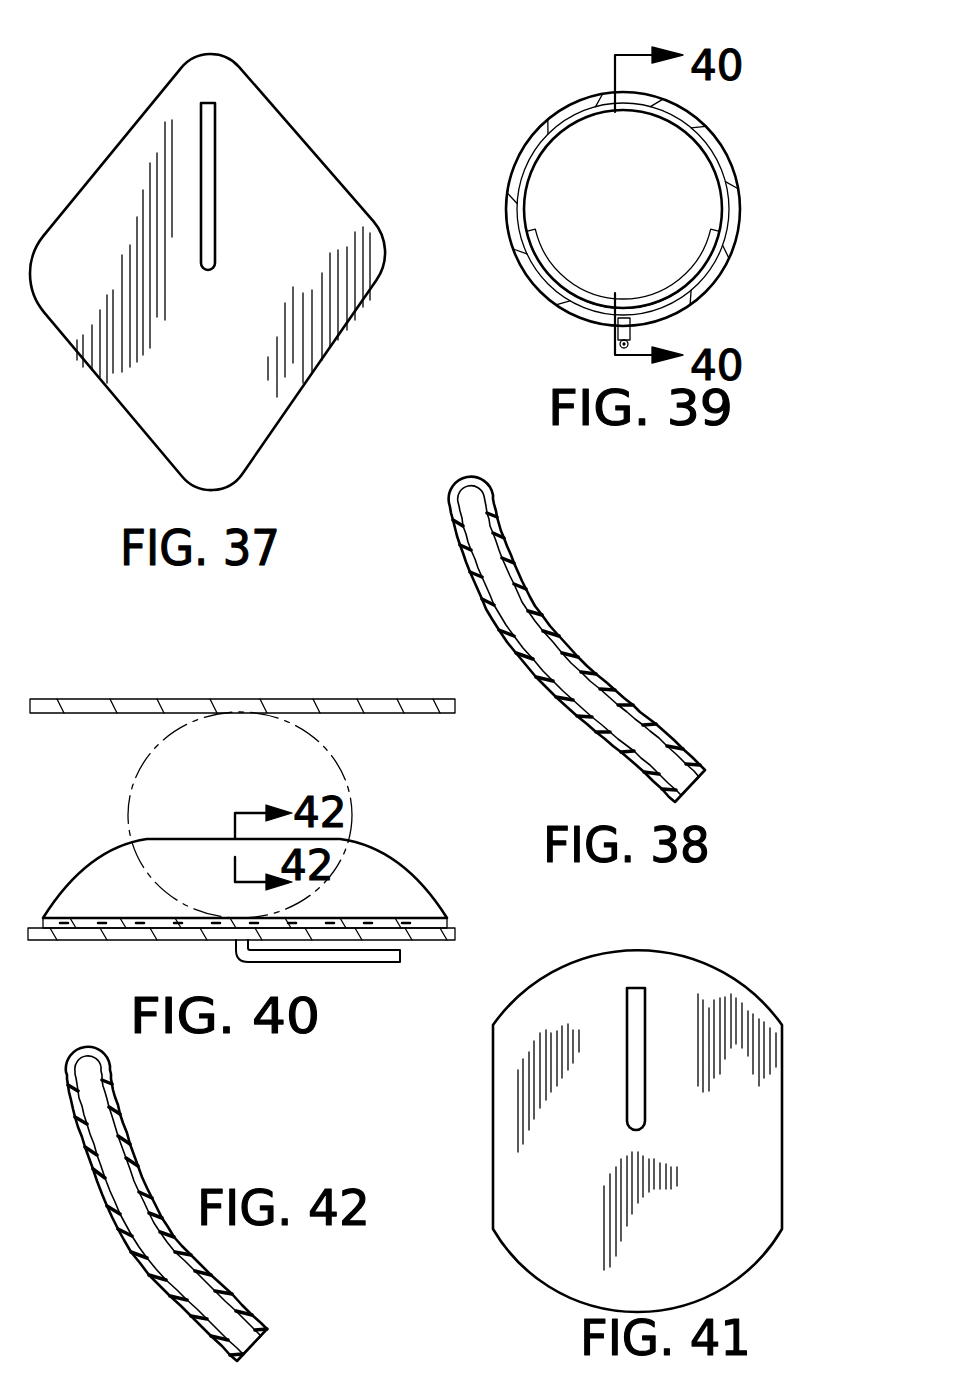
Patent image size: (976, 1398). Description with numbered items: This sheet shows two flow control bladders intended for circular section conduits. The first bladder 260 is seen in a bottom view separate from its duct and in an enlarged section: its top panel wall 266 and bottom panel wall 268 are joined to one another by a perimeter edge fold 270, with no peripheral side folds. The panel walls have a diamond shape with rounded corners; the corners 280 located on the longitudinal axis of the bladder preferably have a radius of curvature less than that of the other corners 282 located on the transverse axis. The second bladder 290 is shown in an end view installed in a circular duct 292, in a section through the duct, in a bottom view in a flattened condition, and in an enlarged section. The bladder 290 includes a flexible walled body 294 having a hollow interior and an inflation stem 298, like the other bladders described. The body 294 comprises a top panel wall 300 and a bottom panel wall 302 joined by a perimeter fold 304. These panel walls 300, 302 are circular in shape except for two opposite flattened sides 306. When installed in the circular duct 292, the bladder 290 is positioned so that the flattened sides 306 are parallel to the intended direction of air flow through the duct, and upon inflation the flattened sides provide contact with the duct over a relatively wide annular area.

In FIG. 37, the flow control bladder 260 is at (70, 374).
In FIG. 38, the top panel wall 266 is at (520, 582).
In FIG. 38, the bottom panel wall 268 is at (510, 642).
In FIG. 37, the perimeter edge fold 270 is at (103, 143).
In FIG. 38, the perimeter edge fold 270 is at (465, 478).
In FIG. 37, the corners 280 is at (206, 55).
In FIG. 37, the corners 282 is at (31, 272).
In FIG. 39, the flow control bladder 290 is at (562, 266).
In FIG. 40, the flow control bladder 290 is at (402, 854).
In FIG. 41, the flow control bladder 290 is at (678, 940).
In FIG. 39, the circular duct 292 is at (717, 130).
In FIG. 40, the circular duct 292 is at (356, 699).
In FIG. 39, the flexible walled body 294 is at (673, 288).
In FIG. 39, the inflation stem 298 is at (632, 336).
In FIG. 40, the inflation stem 298 is at (352, 962).
In FIG. 41, the inflation stem 298 is at (627, 1038).
In FIG. 42, the top panel wall 300 is at (192, 1246).
In FIG. 42, the bottom panel wall 302 is at (112, 1207).
In FIG. 42, the perimeter fold 304 is at (90, 1048).
In FIG. 41, the perimeter fold 304 is at (597, 950).
In FIG. 41, the flattened sides 306 is at (493, 1100).